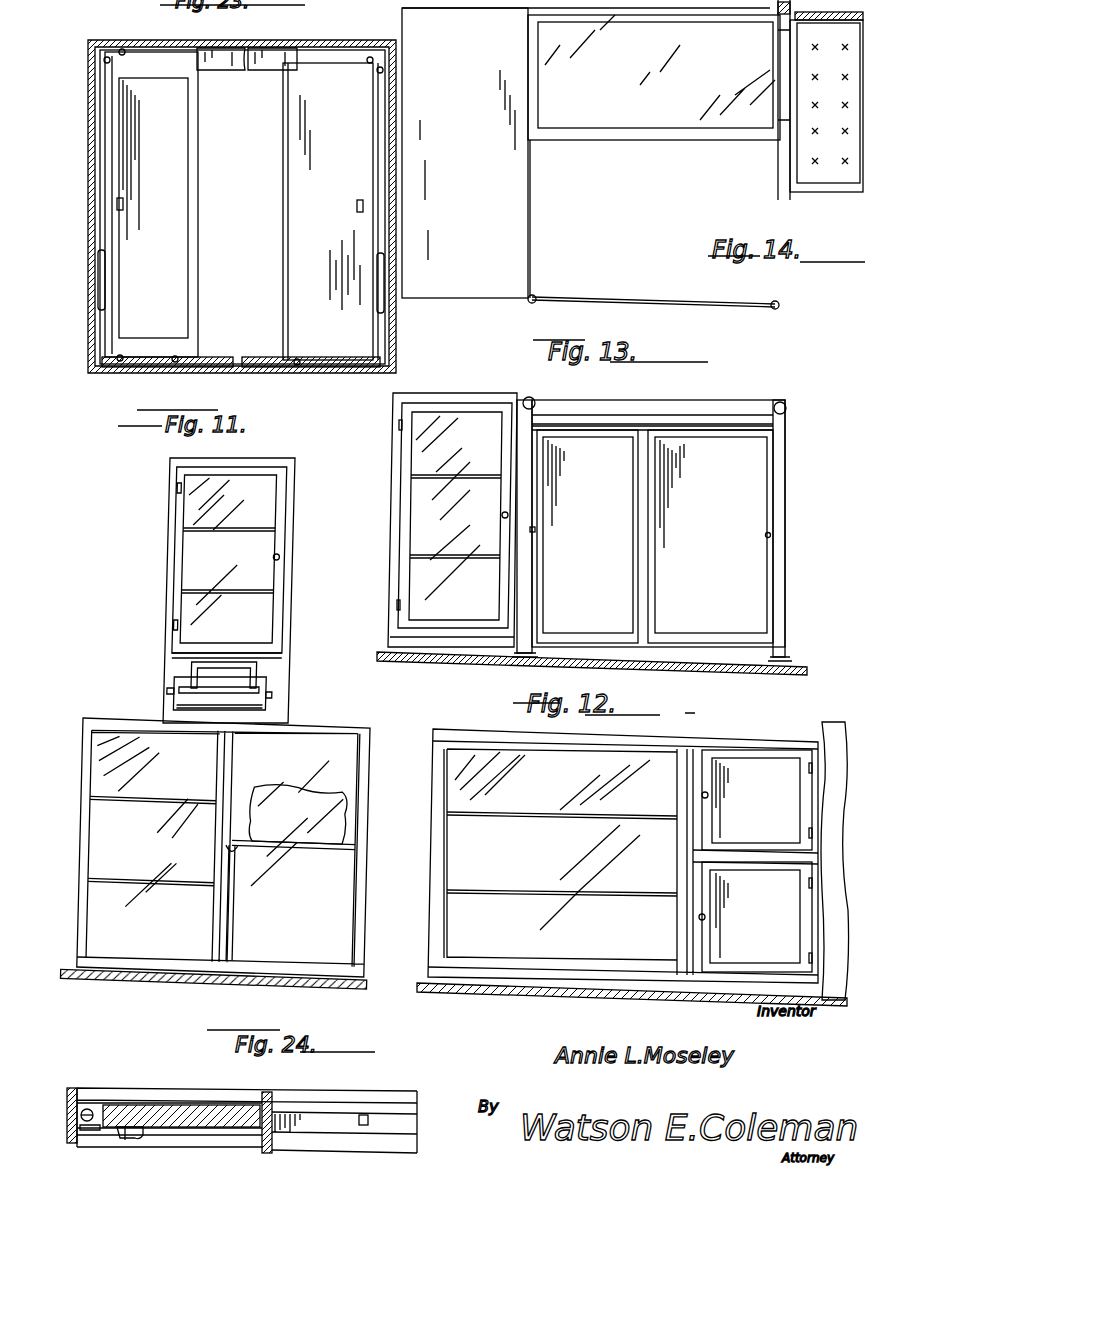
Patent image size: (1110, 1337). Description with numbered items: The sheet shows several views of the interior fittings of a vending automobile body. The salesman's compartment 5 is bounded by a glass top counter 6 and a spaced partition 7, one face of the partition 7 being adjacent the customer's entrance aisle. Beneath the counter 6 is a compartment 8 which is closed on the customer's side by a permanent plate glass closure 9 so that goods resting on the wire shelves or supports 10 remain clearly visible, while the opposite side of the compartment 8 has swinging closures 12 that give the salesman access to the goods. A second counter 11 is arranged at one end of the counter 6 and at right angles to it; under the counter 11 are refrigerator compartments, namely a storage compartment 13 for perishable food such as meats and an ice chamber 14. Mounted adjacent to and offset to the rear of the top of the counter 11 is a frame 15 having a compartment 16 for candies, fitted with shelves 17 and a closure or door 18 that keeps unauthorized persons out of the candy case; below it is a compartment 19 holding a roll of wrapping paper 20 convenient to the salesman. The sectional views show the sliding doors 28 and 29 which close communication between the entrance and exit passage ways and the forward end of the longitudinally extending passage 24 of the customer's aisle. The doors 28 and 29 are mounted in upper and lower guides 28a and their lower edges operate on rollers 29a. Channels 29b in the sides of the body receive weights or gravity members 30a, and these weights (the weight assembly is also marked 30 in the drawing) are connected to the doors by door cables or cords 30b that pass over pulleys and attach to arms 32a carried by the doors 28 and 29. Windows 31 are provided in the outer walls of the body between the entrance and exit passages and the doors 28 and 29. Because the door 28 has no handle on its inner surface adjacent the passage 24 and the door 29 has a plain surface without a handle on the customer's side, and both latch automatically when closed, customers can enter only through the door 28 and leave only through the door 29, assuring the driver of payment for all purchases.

In FIG. 14, the salesman's compartment 5 is at (599, 262).
In FIG. 14, the glass top counter 6 is at (698, 118).
In FIG. 13, the glass top counter 6 is at (650, 402).
In FIG. 12, the glass top counter 6 is at (458, 730).
In FIG. 14, the partition 7 is at (681, 297).
In FIG. 13, the partition 7 is at (740, 420).
In FIG. 12, the compartment 8 is at (460, 861).
In FIG. 12, the permanent plate glass closure 9 is at (537, 933).
In FIG. 12, the wire shelves or supports 10 is at (613, 893).
In FIG. 14, the second counter 11 is at (515, 193).
In FIG. 13, the second counter 11 is at (445, 372).
In FIG. 11, the second counter 11 is at (334, 714).
In FIG. 12, the second counter 11 is at (777, 740).
In FIG. 13, the swinging closures 12 is at (673, 597).
In FIG. 11, the storage compartment 13 is at (157, 930).
In FIG. 11, the ice chamber 14 is at (343, 774).
In FIG. 11, the frame 15 is at (160, 588).
In FIG. 12, the frame 15 is at (845, 722).
In FIG. 11, the compartment for candies 16 is at (260, 505).
In FIG. 11, the shelves 17 is at (230, 588).
In FIG. 11, the closure or door 18 is at (180, 515).
In FIG. 11, the compartment for roll of wrapping paper 19 is at (273, 672).
In FIG. 11, the roll of wrapping paper 20 is at (180, 697).
In FIG. 23, the longitudinally extending passage 24 is at (93, 243).
In FIG. 23, the door 28 is at (177, 192).
In FIG. 24, the door 28 is at (203, 1113).
In FIG. 23, the upper and lower guides 28a is at (280, 53).
In FIG. 24, the upper and lower guides 28a is at (333, 1120).
In FIG. 23, the door 29 is at (290, 283).
In FIG. 14, the door 29 is at (767, 20).
In FIG. 23, the rollers 29a is at (173, 382).
In FIG. 24, the rollers 29a is at (373, 1115).
In FIG. 23, the channels 29b is at (392, 118).
In FIG. 24, the channels 29b is at (100, 1103).
In FIG. 23, the bumper 30 is at (121, 205).
In FIG. 24, the bumper 30 is at (143, 1107).
In FIG. 24, the weights or gravity members 30a is at (78, 1085).
In FIG. 23, the door cables or cords 30b is at (122, 52).
In FIG. 23, the windows 31 is at (128, 70).
In FIG. 23, the arms 32a is at (277, 60).